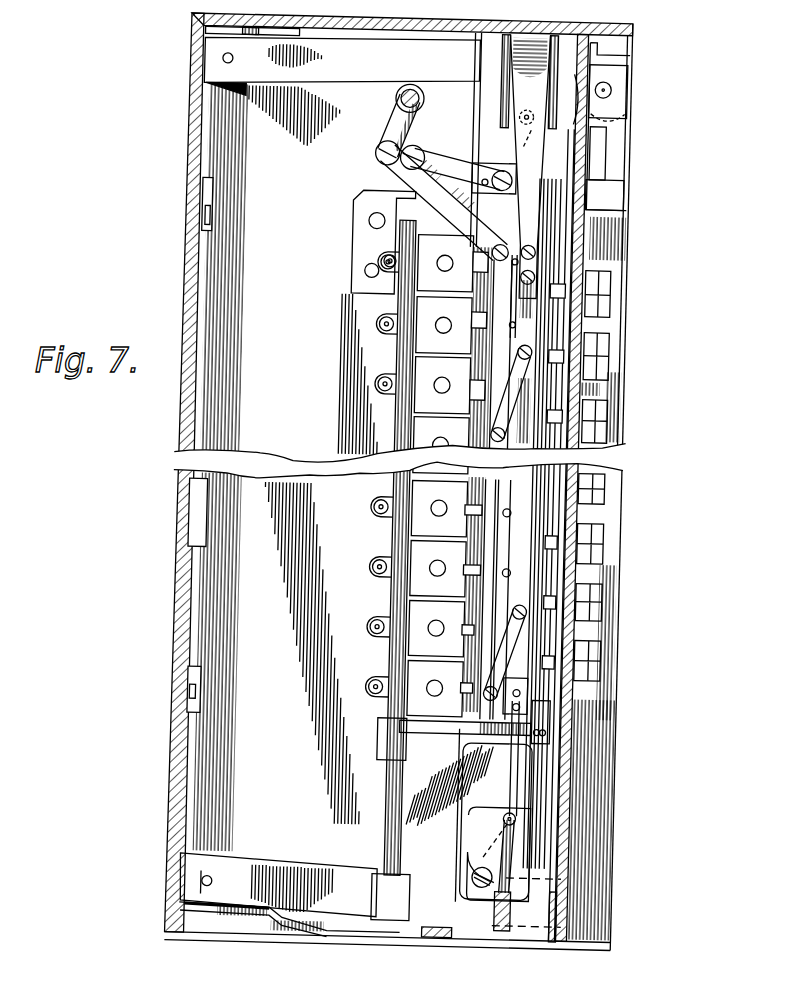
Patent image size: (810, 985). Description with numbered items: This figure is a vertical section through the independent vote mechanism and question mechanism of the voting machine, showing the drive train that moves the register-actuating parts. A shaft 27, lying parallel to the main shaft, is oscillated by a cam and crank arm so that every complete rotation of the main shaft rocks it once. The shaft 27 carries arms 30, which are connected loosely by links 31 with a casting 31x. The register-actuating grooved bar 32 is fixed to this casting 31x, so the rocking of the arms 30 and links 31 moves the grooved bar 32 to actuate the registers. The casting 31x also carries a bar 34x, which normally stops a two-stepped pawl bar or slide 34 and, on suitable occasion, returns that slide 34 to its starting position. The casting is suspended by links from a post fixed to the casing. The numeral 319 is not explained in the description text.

The shaft 27 is at (405, 95).
The arms 30 is at (417, 130).
The links 31 is at (477, 156).
The casting 31x is at (494, 156).
The cross bar 319 is at (505, 63).
The register-actuating grooved bar 32 is at (523, 254).
The two-stepped pawl bar or slide 34 is at (388, 256).
The bar 34x is at (509, 290).